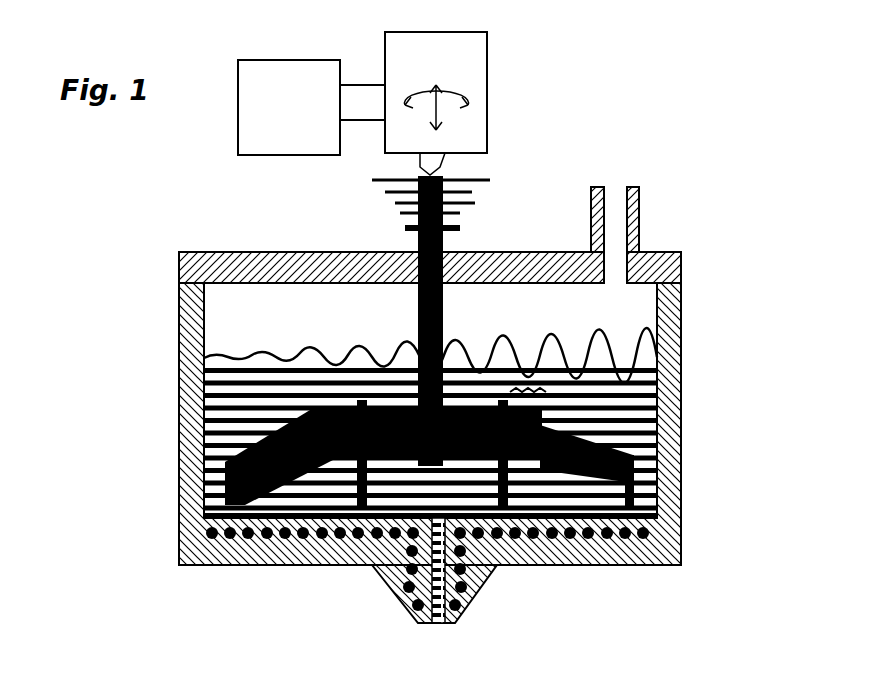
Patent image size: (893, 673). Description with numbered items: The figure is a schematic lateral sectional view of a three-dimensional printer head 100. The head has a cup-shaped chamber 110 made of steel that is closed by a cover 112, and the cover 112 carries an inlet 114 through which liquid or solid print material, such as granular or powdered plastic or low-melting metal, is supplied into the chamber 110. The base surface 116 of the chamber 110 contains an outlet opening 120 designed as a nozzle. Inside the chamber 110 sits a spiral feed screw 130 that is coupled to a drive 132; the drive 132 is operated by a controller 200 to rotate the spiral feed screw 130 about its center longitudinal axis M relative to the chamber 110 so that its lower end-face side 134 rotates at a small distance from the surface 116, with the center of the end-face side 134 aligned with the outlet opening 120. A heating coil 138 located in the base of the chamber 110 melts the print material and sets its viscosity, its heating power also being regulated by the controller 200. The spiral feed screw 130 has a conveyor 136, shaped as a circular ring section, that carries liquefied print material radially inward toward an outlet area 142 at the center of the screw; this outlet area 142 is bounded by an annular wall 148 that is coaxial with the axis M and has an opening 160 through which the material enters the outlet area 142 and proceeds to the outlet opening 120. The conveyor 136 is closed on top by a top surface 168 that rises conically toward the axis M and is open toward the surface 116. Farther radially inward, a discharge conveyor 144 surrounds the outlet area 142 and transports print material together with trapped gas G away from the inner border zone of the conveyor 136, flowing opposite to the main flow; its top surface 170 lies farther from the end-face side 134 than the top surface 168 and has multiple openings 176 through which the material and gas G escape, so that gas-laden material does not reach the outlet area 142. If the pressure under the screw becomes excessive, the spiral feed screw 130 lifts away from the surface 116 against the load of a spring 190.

The 3D printer head 100 is at (178, 218).
The cup-shaped chamber 110 is at (178, 372).
The cover 112 is at (180, 282).
The inlet 114 is at (592, 240).
The surface 116 is at (180, 505).
The outlet opening 120 is at (398, 593).
The spiral feed screw 130 is at (180, 432).
The drive 132 is at (436, 103).
The end-face side 134 is at (238, 565).
The conveyor 136 is at (682, 440).
The heating coil 138 is at (205, 543).
The outlet area 142 is at (460, 560).
The discharge conveyor 144 is at (655, 392).
The annular wall 148 is at (316, 565).
The opening 160 is at (540, 565).
The top surface 168 is at (660, 565).
The top surface 170 is at (590, 565).
The openings 176 is at (180, 360).
The spring 190 is at (397, 205).
The controller 200 is at (311, 107).
The center longitudinal axis M is at (405, 250).
The gas G is at (180, 330).